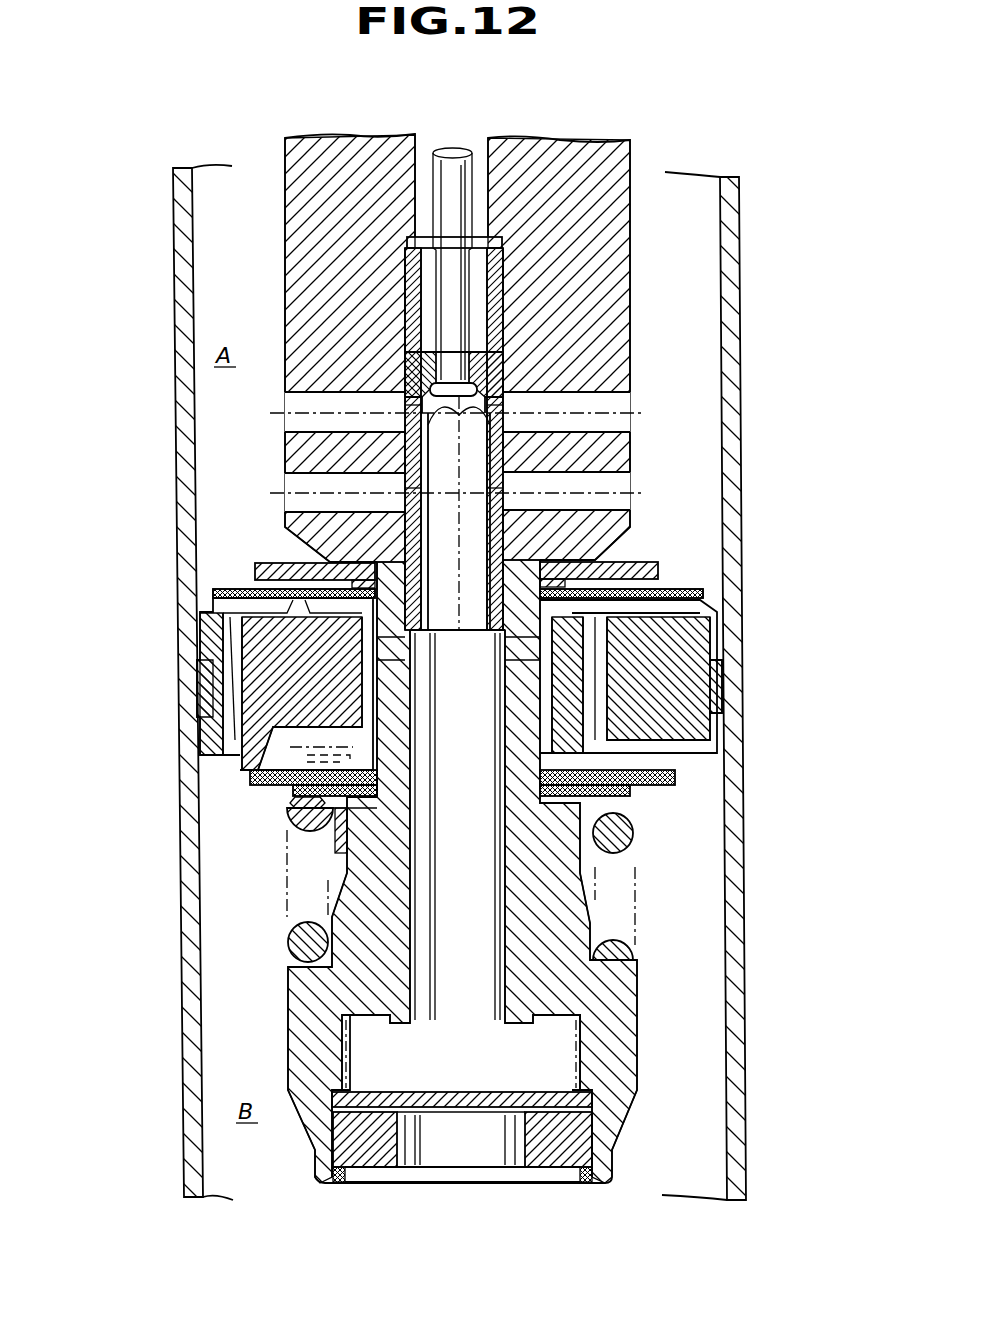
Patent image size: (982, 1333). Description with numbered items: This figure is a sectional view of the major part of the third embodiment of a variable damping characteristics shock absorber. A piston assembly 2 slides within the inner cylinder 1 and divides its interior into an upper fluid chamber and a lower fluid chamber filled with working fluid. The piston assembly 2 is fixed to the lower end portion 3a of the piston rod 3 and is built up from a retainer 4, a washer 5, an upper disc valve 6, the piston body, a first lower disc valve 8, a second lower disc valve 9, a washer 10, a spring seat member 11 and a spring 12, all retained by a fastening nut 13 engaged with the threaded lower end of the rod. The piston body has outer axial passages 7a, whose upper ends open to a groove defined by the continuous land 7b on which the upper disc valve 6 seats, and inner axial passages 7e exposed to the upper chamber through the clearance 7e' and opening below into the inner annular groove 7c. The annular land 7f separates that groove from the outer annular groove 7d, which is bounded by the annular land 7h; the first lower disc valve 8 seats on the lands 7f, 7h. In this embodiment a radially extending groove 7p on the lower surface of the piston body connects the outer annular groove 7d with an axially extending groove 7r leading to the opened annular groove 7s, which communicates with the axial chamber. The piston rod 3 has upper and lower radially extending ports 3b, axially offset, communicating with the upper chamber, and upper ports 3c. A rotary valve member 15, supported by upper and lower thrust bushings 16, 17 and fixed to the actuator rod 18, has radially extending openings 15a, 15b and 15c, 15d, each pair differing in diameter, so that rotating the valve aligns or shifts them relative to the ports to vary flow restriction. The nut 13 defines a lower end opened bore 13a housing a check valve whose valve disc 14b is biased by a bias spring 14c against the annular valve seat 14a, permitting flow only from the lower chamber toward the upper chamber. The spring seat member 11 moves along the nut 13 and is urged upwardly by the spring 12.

The inner cylinder 1 is at (172, 190).
The piston assembly 2 is at (180, 660).
The piston rod 3 is at (280, 245).
The piston rod lower portion 3a is at (470, 891).
The radially extending ports 3b is at (300, 410).
The upper ports 3c is at (503, 660).
The retainer 4 is at (256, 590).
The washer 5 is at (332, 560).
The upper disc valve 6 is at (215, 596).
The outer axial passage 7a is at (205, 627).
The continuous land 7b is at (228, 603).
The inner annular groove 7c is at (640, 800).
The outer annular groove 7d is at (720, 746).
The inner axial passage 7e is at (674, 685).
The clearance 7e' is at (671, 657).
The annular land 7f is at (640, 790).
The annular land 7h is at (690, 778).
The radially extending groove 7p is at (300, 735).
The axially extending groove 7r is at (228, 690).
The annular groove 7s is at (600, 640).
The first lower disc valve 8 is at (270, 779).
The second lower disc valve 9 is at (300, 797).
The washer 10 is at (300, 822).
The spring seat member 11 is at (325, 808).
The spring 12 is at (302, 945).
The fastening nut 13 is at (300, 1055).
The lower end opened bore 13a is at (338, 1182).
The annular valve seat 14a is at (385, 1152).
The valve disc 14b is at (515, 1095).
The bias spring 14c is at (350, 1085).
The rotary valve member 15 is at (632, 297).
The radially extending opening 15a is at (405, 405).
The smaller diameter opening 15b is at (518, 363).
The greater diameter opening 15c is at (395, 493).
The opening 15d is at (520, 495).
The upper thrust bushing 16 is at (495, 280).
The lower thrust bushing 17 is at (460, 640).
The actuator rod 18 is at (455, 178).